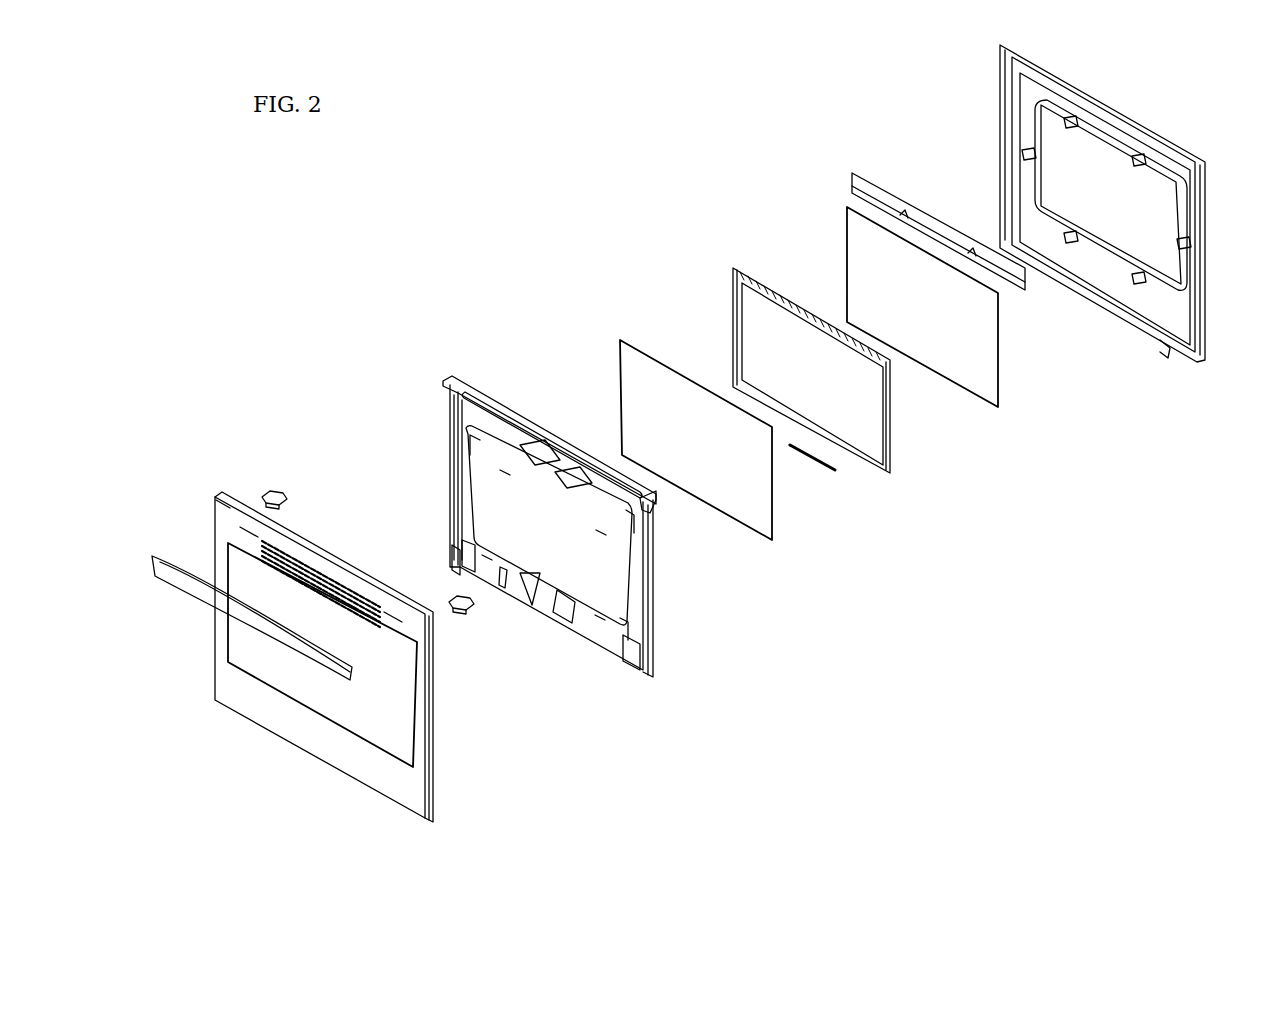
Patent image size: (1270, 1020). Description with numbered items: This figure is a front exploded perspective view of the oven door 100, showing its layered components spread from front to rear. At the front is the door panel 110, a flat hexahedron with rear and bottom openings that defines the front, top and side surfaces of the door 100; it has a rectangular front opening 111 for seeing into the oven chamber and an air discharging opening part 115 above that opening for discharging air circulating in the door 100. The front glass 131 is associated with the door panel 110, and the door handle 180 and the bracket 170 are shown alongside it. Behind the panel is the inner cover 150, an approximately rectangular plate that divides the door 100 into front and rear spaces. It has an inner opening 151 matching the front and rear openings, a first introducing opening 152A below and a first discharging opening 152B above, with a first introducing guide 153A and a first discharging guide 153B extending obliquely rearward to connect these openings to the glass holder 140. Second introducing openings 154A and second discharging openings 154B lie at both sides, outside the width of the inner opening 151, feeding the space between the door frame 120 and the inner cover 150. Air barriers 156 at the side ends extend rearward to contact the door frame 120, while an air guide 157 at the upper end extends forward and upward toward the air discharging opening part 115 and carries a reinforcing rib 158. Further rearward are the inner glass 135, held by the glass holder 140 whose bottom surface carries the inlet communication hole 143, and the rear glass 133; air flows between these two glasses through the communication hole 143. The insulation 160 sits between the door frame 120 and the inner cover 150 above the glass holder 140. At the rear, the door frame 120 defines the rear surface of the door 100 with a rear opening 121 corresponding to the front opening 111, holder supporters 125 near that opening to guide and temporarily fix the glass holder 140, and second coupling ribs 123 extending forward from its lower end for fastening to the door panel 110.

The door 100 is at (592, 163).
The door panel 110 is at (354, 772).
The front opening 111 is at (229, 575).
The air discharging opening part 115 is at (304, 563).
The door frame 120 is at (996, 96).
The rear opening 121 is at (1172, 197).
The second coupling ribs 123 is at (1163, 347).
The holder supporters 125 is at (1068, 116).
The front glass 131 is at (317, 685).
The rear glass 133 is at (860, 225).
The inner glass 135 is at (622, 384).
The glass holder 140 is at (730, 290).
The communication hole 143 is at (822, 432).
The inner cover 150 is at (612, 660).
The inner opening 151 is at (470, 487).
The first introducing opening 152A is at (545, 600).
The first discharging opening 152B is at (541, 450).
The first introducing guide 153A is at (563, 610).
The first discharging guide 153B is at (568, 472).
The second introducing openings 154A is at (463, 566).
The second discharging openings 154B is at (470, 388).
The air barriers 156 is at (657, 578).
The air guide 157 is at (648, 513).
The reinforcing rib 158 is at (450, 382).
The insulation 160 is at (881, 186).
The bracket 170 is at (272, 491).
The door handle 180 is at (183, 592).